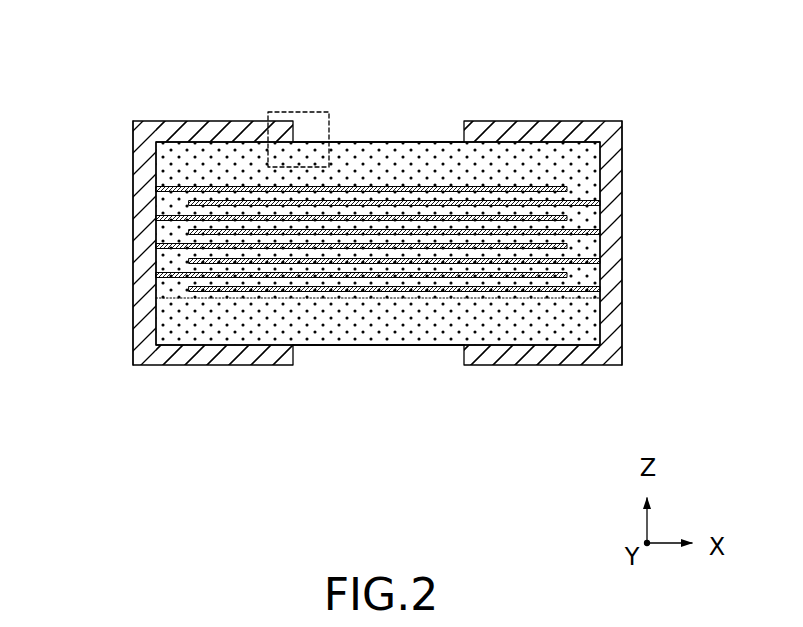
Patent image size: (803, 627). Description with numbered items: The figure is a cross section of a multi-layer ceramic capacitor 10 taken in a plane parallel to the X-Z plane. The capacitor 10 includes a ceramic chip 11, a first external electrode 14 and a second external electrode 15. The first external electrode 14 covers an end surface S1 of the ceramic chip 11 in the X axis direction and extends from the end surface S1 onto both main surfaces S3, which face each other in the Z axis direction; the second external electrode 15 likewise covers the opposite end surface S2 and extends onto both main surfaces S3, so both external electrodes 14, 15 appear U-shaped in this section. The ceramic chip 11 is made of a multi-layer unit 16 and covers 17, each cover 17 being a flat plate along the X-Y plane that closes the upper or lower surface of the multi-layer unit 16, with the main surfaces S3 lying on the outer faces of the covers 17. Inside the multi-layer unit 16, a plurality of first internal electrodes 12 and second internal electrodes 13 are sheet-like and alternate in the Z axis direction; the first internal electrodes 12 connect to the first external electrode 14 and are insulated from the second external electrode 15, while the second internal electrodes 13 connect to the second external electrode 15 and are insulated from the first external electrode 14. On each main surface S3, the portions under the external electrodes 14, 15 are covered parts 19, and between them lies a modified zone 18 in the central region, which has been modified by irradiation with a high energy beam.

The multi-layer ceramic capacitor 10 is at (102, 74).
The ceramic chip 11 is at (357, 87).
The first internal electrodes 12 is at (156, 189).
The second internal electrodes 13 is at (600, 203).
The first external electrode 14 is at (163, 120).
The second external electrode 15 is at (571, 135).
The multi-layer unit 16 is at (421, 322).
The covers 17 is at (415, 141).
The modified zones 18 is at (437, 141).
The covered parts 19 is at (233, 120).
The end surface S1 is at (140, 286).
The end surface S2 is at (615, 187).
The main surfaces S3 is at (336, 128).